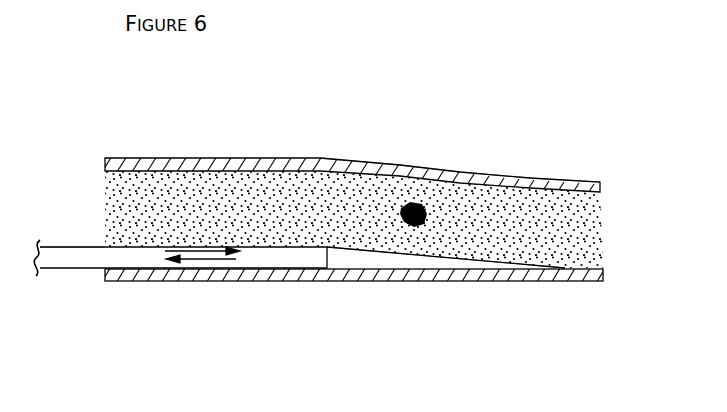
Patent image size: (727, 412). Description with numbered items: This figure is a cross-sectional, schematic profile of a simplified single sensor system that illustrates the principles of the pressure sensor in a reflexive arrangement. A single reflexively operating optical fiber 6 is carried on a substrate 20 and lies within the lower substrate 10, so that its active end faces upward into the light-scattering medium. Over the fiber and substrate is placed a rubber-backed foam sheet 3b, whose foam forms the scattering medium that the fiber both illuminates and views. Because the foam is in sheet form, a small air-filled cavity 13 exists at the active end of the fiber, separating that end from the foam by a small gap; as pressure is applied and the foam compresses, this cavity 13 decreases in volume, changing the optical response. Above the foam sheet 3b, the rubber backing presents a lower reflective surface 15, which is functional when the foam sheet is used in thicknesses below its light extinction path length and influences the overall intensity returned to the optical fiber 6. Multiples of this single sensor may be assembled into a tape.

The optical fiber 6 is at (55, 250).
The rubber-backed foam sheet 3b is at (260, 190).
The lower reflective surface 15 is at (482, 187).
The lower substrate 10 is at (567, 273).
The substrate 20 is at (138, 282).
The air-filled cavity 13 is at (360, 260).